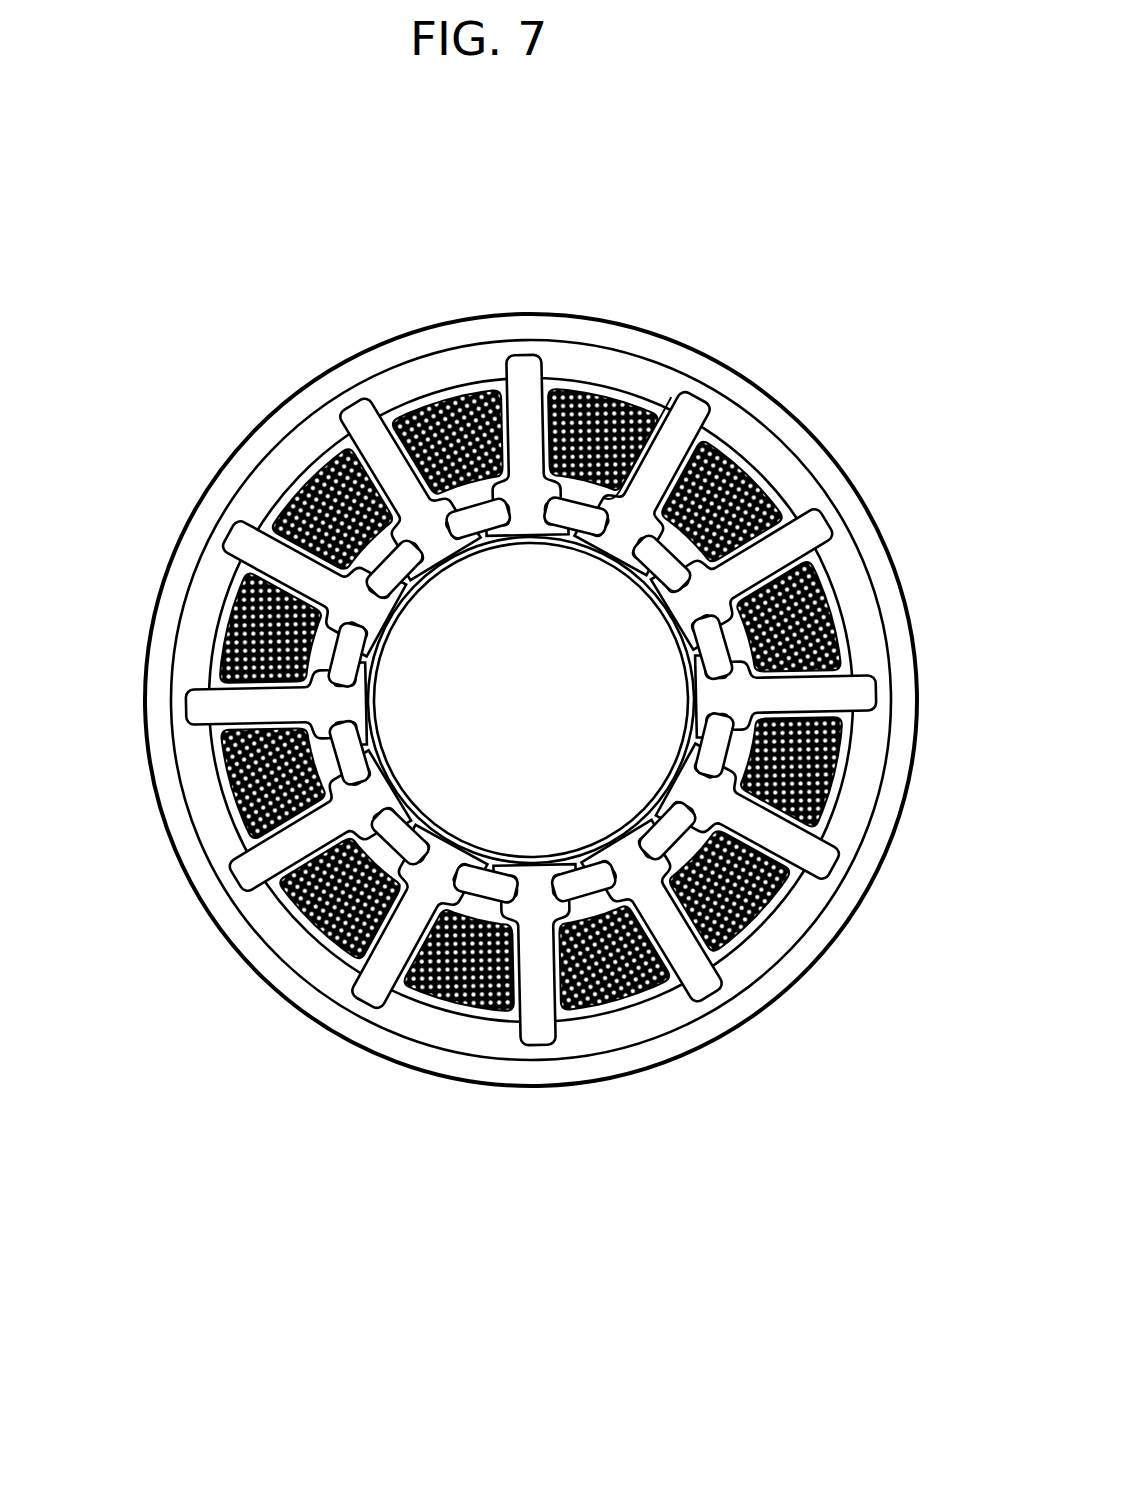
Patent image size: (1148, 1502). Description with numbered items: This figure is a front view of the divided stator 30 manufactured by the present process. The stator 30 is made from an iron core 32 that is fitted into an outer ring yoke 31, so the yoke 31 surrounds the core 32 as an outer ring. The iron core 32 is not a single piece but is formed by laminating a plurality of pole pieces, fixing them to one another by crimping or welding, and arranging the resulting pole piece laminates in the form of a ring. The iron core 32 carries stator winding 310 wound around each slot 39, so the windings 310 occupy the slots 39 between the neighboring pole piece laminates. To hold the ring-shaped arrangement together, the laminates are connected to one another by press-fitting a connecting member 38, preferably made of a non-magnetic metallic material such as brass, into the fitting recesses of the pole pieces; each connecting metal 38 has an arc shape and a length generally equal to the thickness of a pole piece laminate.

The stator 30 is at (540, 755).
The outer ring yoke 31 is at (577, 1043).
The iron core 32 is at (700, 977).
The connecting member 38 is at (682, 398).
The slot 39 is at (499, 388).
The stator winding 310 is at (440, 395).